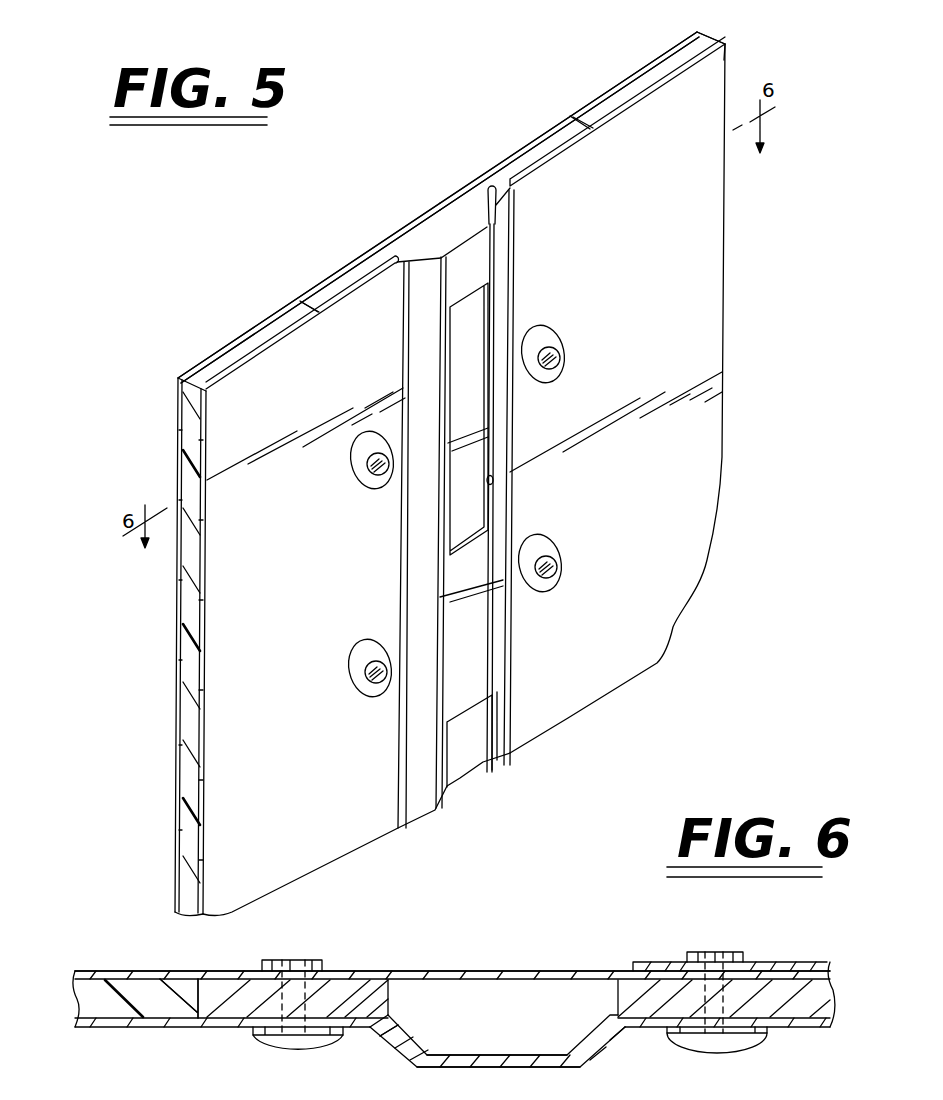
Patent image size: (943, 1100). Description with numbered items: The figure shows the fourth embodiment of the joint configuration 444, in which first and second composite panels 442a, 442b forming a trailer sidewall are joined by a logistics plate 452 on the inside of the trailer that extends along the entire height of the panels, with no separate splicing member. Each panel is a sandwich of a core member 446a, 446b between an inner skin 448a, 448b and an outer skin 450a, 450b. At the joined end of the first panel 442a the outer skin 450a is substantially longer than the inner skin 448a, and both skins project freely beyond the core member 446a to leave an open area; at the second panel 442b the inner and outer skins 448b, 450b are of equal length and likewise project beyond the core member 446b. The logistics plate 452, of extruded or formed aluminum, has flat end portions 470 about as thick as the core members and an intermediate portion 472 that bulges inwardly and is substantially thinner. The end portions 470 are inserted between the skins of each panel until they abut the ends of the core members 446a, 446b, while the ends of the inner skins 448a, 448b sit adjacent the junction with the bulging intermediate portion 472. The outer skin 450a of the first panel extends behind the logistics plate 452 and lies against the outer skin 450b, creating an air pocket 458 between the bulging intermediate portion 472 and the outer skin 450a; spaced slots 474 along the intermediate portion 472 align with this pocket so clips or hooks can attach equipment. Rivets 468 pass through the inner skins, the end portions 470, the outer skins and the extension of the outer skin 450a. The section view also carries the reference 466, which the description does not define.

In FIG. 5, the first composite panel 442a is at (280, 870).
In FIG. 6, the first composite panel 442a is at (153, 966).
In FIG. 5, the second composite panel 442b is at (600, 680).
In FIG. 6, the second composite panel 442b is at (840, 984).
In FIG. 5, the joint configuration 444 is at (398, 215).
In FIG. 5, the core member 446a is at (205, 380).
In FIG. 6, the core member 446a is at (92, 997).
In FIG. 5, the core member 446b is at (702, 45).
In FIG. 5, the inner skin 448a is at (258, 368).
In FIG. 6, the inner skin 448a is at (145, 1027).
In FIG. 5, the inner skin 448b is at (707, 66).
In FIG. 6, the inner skin 448b is at (792, 1025).
In FIG. 5, the outer skin 450a is at (218, 353).
In FIG. 6, the outer skin 450a is at (530, 970).
In FIG. 5, the outer skin 450b is at (632, 72).
In FIG. 6, the outer skin 450b is at (672, 962).
In FIG. 5, the logistics plate 452 is at (411, 796).
In FIG. 6, the logistics plate 452 is at (550, 1069).
In FIG. 5, the air pocket 458 is at (433, 220).
In FIG. 6, the air pocket 458 is at (383, 1033).
In FIG. 6, the panel assembly 466 is at (460, 962).
In FIG. 5, the rivets 468 is at (550, 340).
In FIG. 6, the rivets 468 is at (285, 1043).
In FIG. 5, the end portions 470 is at (333, 283).
In FIG. 6, the end portions 470 is at (215, 1000).
In FIG. 5, the intermediate portion 472 is at (497, 245).
In FIG. 6, the intermediate portion 472 is at (470, 1067).
In FIG. 5, the slots 474 is at (494, 481).